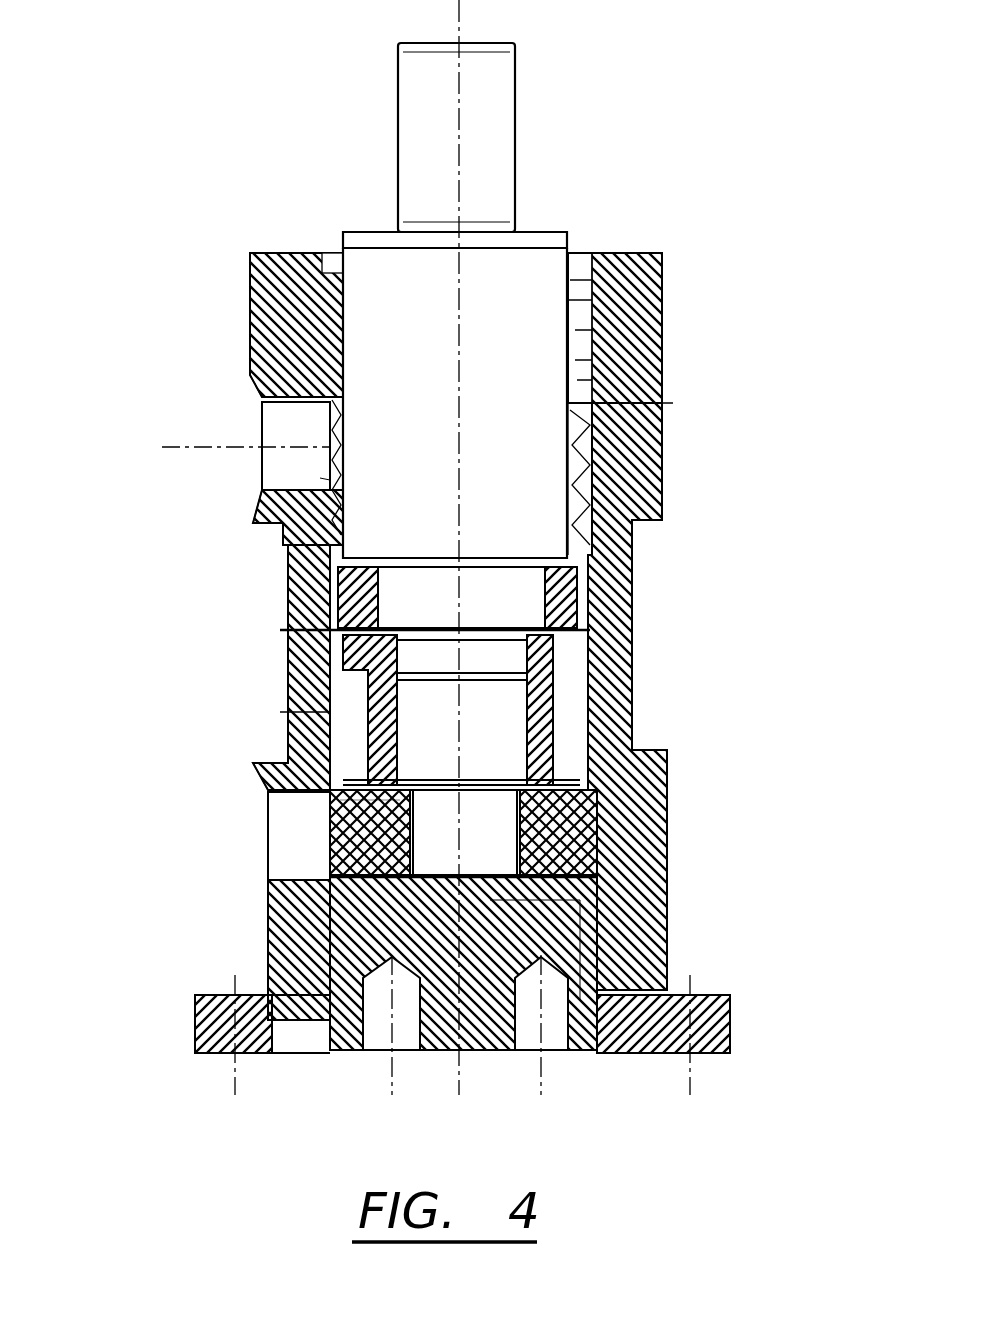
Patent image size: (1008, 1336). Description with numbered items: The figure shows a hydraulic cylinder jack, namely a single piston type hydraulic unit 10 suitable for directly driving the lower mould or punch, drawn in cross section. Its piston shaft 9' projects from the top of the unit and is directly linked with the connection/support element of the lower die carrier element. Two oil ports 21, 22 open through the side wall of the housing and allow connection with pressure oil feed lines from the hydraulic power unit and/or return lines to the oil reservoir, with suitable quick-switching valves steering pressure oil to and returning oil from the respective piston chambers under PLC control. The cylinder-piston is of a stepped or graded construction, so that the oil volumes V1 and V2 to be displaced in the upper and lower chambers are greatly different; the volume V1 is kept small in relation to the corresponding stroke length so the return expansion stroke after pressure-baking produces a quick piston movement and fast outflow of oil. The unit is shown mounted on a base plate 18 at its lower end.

The piston shaft 9' is at (479, 439).
The single piston type hydraulic unit 10 is at (718, 358).
The oil port 21 is at (260, 463).
The oil port 22 is at (267, 835).
The base plate 18 is at (738, 993).
The oil volume in the upper chamber V1 is at (317, 480).
The oil volume in the lower chamber V2 is at (690, 865).